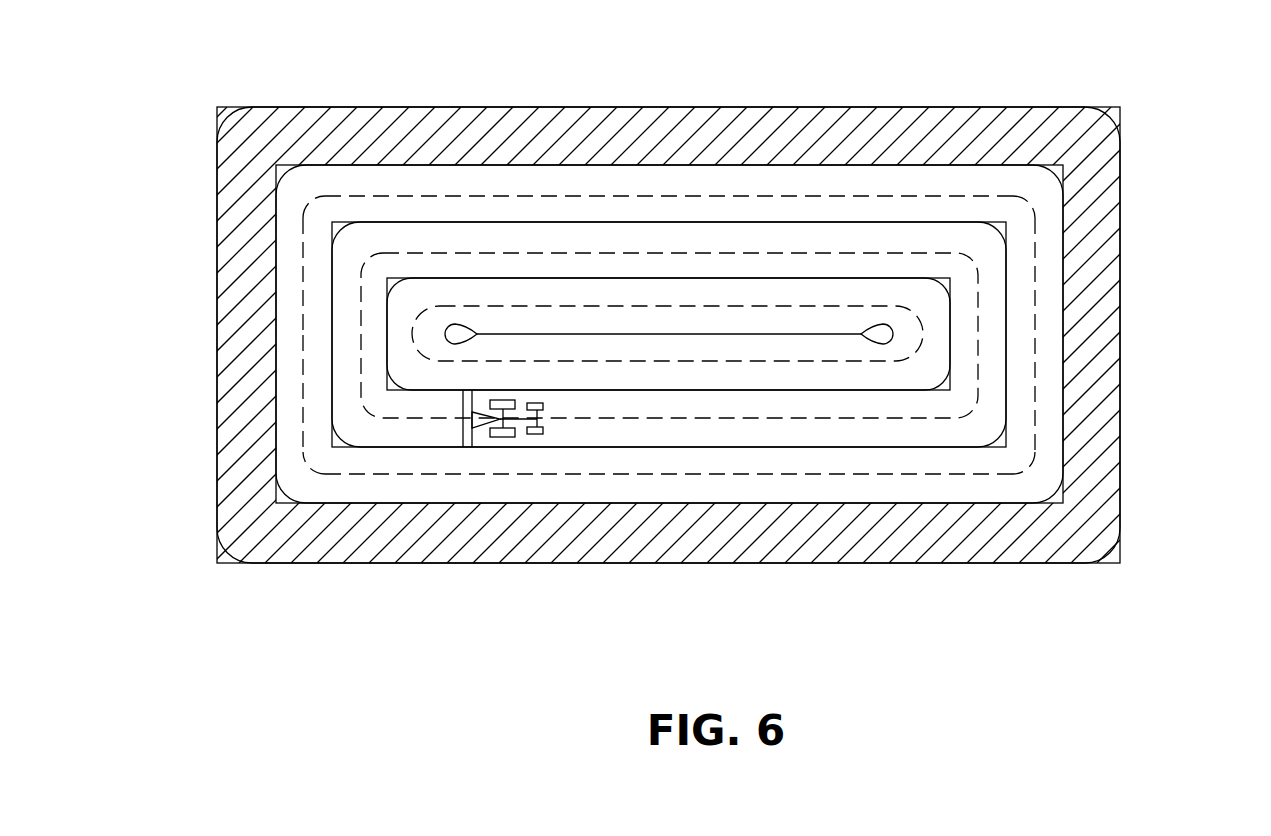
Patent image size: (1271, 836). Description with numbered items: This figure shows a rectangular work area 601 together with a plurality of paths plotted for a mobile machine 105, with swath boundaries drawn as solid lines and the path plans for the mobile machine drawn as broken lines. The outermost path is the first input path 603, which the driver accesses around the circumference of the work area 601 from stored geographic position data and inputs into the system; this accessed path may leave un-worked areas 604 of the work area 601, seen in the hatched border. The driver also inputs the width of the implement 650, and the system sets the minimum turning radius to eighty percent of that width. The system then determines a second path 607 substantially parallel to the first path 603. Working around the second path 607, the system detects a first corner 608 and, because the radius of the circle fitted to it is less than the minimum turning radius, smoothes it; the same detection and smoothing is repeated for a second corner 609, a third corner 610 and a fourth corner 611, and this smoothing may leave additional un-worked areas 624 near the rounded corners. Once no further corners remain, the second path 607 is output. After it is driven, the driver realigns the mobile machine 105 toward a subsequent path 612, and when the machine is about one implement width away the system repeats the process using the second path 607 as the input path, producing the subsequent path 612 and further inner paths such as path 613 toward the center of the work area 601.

The work area 601 is at (187, 317).
The first input path 603 is at (1125, 218).
The un-worked areas 604 is at (214, 108).
The second path 607 is at (1038, 358).
The first corner 608 is at (1038, 463).
The second corner 609 is at (301, 433).
The third corner 610 is at (301, 243).
The fourth corner 611 is at (1038, 208).
The subsequent path 612 is at (782, 421).
The subsequent path 613 is at (650, 338).
The additional un-worked areas 624 is at (450, 321).
The implement 650 is at (468, 449).
The mobile machine 105 is at (537, 440).